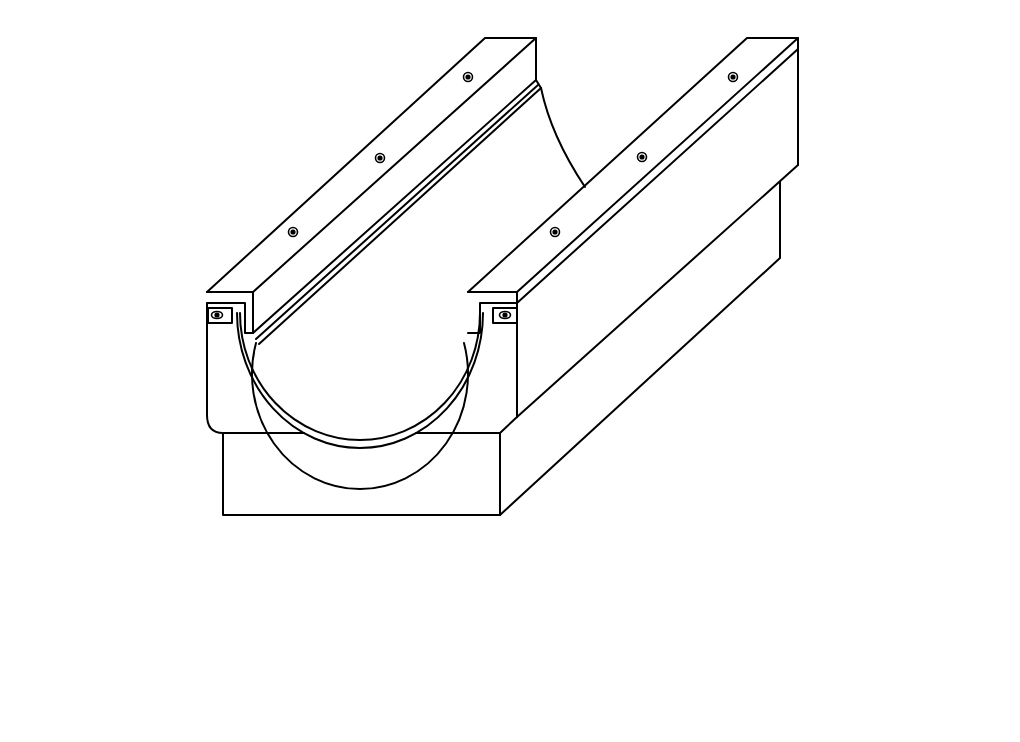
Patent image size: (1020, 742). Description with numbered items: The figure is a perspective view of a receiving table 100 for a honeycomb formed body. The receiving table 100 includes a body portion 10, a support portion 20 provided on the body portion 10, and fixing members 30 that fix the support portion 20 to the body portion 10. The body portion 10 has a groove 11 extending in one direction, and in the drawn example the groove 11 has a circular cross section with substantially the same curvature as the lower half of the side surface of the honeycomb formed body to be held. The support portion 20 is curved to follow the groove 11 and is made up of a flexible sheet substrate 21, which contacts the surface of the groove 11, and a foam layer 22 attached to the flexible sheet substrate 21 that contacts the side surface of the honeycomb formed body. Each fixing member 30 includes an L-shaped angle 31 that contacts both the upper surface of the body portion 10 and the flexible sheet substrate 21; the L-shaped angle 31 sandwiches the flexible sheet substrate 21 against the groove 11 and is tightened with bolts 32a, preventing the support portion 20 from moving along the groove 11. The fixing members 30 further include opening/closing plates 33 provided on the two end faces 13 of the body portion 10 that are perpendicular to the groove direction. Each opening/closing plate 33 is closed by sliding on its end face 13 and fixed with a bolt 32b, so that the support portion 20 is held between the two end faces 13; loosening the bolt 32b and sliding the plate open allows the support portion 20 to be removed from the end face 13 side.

The receiving table 100 is at (467, 612).
The body portion 10 is at (652, 250).
The groove 11 is at (468, 377).
The end face 13 is at (798, 108).
The support portion 20 is at (120, 383).
The flexible sheet substrate 21 is at (260, 388).
The foam layer 22 is at (260, 367).
The fixing member 30 is at (108, 203).
The L-shaped angle 31 is at (230, 295).
The bolt 32a is at (293, 228).
The bolt 32b is at (217, 316).
The opening/closing plate 33 is at (215, 312).